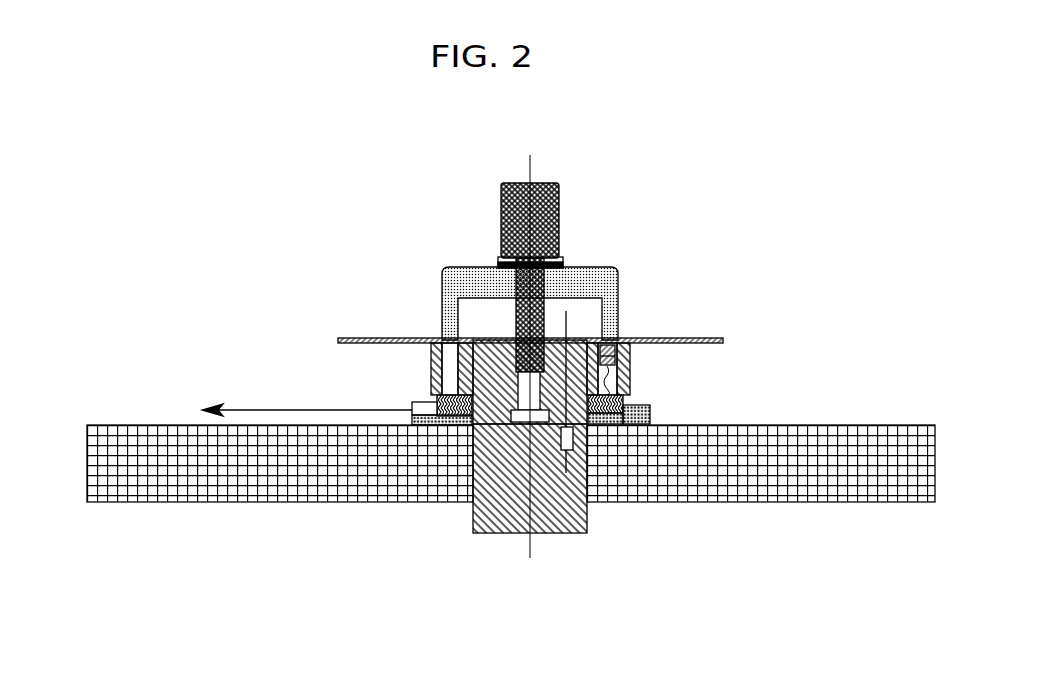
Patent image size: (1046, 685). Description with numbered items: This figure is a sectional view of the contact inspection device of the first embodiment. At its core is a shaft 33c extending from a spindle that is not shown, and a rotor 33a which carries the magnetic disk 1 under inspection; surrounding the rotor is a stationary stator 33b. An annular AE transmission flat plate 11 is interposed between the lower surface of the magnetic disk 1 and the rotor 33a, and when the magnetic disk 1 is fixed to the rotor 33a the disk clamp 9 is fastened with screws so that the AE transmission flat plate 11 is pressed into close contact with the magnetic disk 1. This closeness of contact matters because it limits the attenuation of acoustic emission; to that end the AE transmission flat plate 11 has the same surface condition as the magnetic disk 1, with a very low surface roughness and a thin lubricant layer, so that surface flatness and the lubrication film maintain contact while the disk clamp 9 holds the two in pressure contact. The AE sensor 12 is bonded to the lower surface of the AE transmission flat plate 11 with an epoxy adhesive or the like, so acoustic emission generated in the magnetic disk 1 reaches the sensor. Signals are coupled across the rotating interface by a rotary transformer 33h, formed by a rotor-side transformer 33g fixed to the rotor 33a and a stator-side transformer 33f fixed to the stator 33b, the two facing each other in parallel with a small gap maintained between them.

The magnetic disk 1 is at (702, 340).
The disk clamp 9 is at (597, 266).
The AE transmission flat plate 11 is at (626, 348).
The AE sensor 12 is at (630, 365).
The rotor 33a is at (480, 350).
The stator 33b is at (412, 421).
The shaft 33c is at (570, 528).
The stator-side transformer 33f is at (437, 411).
The rotor-side transformer 33g is at (435, 404).
The rotary transformer 33h is at (282, 310).